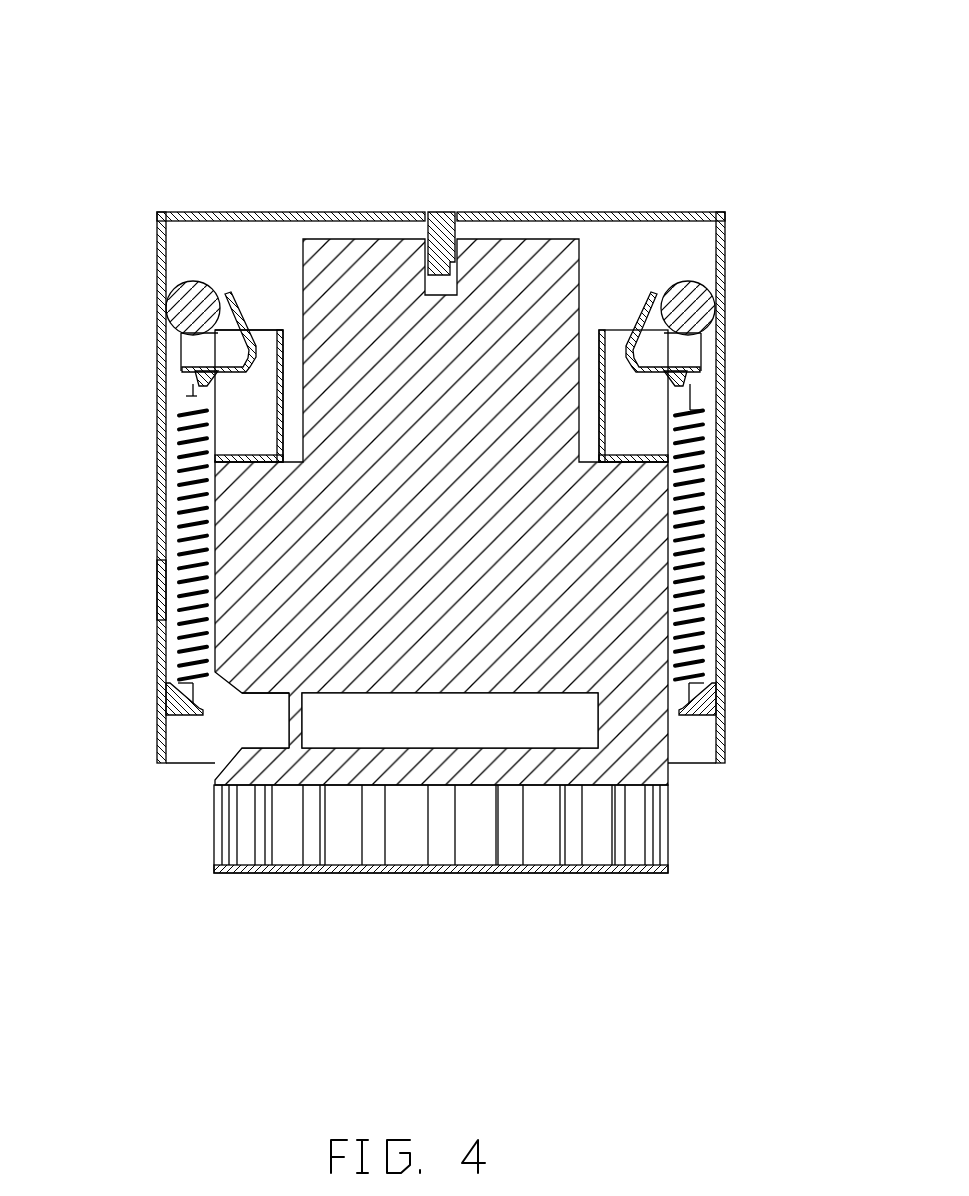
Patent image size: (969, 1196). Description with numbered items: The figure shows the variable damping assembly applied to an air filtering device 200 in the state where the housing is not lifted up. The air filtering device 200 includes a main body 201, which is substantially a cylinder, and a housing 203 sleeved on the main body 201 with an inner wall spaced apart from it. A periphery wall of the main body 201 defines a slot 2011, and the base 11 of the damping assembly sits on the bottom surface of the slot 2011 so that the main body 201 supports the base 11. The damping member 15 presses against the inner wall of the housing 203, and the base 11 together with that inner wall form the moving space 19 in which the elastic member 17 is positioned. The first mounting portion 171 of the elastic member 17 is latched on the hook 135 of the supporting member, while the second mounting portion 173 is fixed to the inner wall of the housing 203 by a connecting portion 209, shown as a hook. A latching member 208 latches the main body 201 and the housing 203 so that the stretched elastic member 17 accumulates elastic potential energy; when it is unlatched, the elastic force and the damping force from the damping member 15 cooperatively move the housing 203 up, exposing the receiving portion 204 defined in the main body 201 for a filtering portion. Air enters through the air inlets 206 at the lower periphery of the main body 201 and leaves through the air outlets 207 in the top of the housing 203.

The air filtering device 200 is at (398, 35).
The base 11 is at (266, 330).
The damping member 15 is at (190, 308).
The elastic member 17 is at (187, 523).
The moving space 19 is at (166, 586).
The hook 135 is at (186, 383).
The first mounting portion 171 is at (190, 396).
The second mounting portion 173 is at (187, 701).
The main body 201 is at (647, 578).
The housing 203 is at (722, 320).
The receiving portion 204 is at (275, 720).
The air inlets 206 is at (635, 850).
The air outlets 207 is at (607, 217).
The latching member 208 is at (458, 235).
The connecting portion 209 is at (188, 715).
The slot 2011 is at (297, 453).